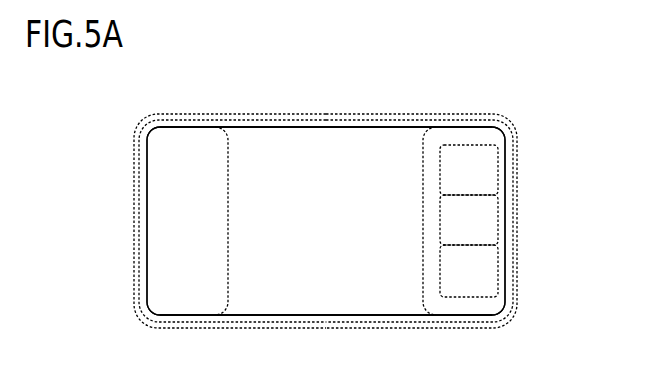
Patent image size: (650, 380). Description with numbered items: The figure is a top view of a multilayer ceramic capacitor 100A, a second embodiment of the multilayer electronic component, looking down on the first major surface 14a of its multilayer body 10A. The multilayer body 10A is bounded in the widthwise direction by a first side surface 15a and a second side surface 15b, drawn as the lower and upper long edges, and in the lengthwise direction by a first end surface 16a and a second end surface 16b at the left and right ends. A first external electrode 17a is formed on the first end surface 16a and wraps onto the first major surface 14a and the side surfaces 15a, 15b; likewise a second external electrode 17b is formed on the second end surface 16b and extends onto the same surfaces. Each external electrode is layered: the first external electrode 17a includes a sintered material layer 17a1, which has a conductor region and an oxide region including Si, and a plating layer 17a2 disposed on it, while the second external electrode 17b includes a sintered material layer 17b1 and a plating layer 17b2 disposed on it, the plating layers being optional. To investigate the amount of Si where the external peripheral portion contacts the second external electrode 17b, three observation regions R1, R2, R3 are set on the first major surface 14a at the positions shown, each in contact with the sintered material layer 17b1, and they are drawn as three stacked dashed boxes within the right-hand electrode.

The multilayer ceramic capacitor 100A is at (613, 80).
The multilayer body 10A is at (399, 127).
The first major surface 14a is at (326, 144).
The first side surface 15a is at (361, 316).
The second side surface 15b is at (359, 126).
The first end surface 16a is at (139, 216).
The second end surface 16b is at (507, 183).
The first external electrode 17a is at (182, 221).
The sintered material layer 17a1 is at (135, 265).
The plating layer 17a2 is at (139, 286).
The second external electrode 17b is at (470, 221).
The sintered material layer 17b1 is at (514, 254).
The plating layer 17b2 is at (518, 270).
The observation region R1 is at (501, 158).
The observation region R2 is at (501, 216).
The observation region R3 is at (501, 288).